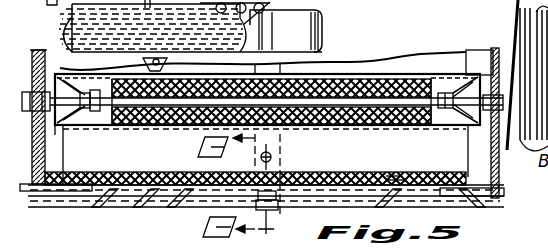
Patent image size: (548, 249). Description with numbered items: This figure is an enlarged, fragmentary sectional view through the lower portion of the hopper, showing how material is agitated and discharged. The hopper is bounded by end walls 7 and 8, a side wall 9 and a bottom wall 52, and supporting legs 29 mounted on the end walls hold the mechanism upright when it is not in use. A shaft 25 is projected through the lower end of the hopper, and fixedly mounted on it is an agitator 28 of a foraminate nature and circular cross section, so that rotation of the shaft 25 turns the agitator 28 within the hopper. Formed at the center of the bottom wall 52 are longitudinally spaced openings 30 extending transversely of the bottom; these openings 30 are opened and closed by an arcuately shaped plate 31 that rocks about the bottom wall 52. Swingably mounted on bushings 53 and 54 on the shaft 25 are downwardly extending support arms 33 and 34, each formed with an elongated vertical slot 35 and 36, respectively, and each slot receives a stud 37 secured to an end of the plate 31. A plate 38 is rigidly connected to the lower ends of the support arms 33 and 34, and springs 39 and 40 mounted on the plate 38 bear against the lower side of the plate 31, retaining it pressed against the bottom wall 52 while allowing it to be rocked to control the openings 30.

The end wall 7 is at (494, 50).
The end wall 8 is at (38, 50).
The side wall 9 is at (366, 63).
The shaft 25 is at (423, 76).
The agitator 28 is at (394, 76).
The supporting leg 29 is at (324, 23).
The opening 30 is at (311, 172).
The arcuately shaped plate 31 is at (100, 207).
The support arm 33 is at (503, 146).
The support arm 34 is at (45, 152).
The elongated vertical slot 35 is at (503, 178).
The elongated vertical slot 36 is at (44, 168).
The stud 37 is at (26, 193).
The plate 38 is at (289, 207).
The spring 39 is at (396, 175).
The spring 40 is at (147, 207).
The bottom wall 52 is at (393, 174).
The bushing 53 is at (29, 117).
The bushing 54 is at (479, 62).